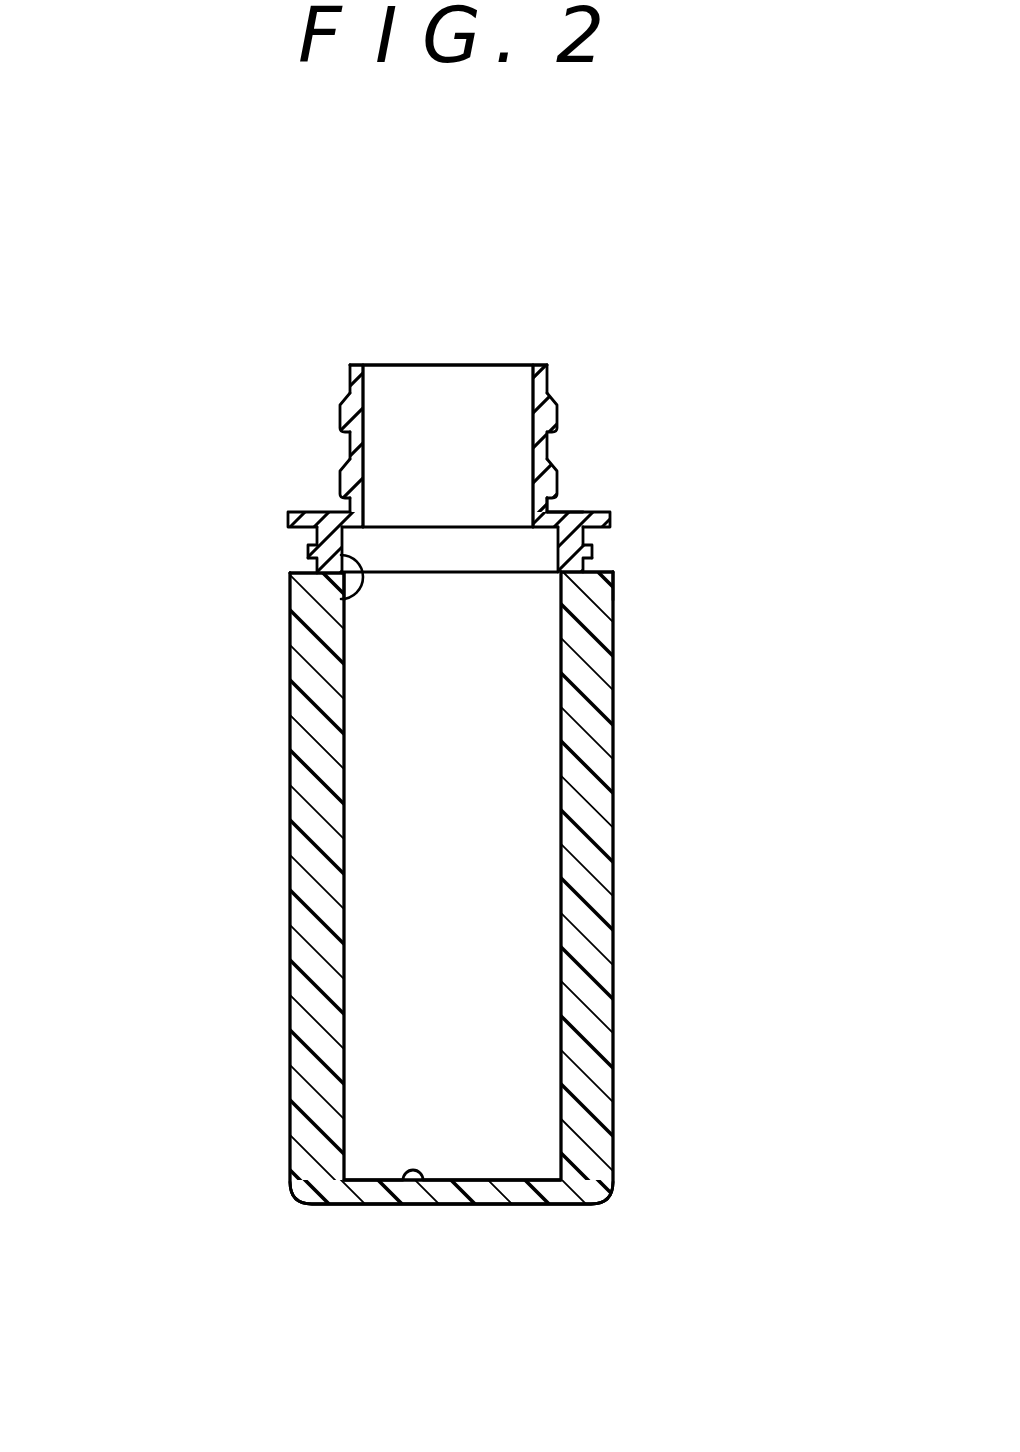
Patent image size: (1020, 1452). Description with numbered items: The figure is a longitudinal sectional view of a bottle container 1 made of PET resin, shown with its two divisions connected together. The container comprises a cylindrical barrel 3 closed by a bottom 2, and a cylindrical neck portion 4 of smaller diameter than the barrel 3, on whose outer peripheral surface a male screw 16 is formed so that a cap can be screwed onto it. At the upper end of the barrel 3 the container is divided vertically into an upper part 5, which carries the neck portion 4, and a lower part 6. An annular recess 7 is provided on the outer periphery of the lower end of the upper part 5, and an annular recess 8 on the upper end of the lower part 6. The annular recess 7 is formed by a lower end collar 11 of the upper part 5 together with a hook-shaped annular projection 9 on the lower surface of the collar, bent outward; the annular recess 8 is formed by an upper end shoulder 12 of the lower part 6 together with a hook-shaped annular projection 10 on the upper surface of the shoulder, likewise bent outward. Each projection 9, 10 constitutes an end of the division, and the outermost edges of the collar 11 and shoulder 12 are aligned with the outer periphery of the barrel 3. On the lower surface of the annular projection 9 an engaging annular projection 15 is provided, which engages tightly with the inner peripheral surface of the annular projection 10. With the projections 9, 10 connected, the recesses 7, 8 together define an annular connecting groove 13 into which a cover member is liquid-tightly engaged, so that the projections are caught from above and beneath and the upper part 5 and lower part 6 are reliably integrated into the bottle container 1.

The bottle container 1 is at (503, 313).
The bottom 2 is at (423, 1182).
The cylindrical barrel 3 is at (297, 884).
The cylindrical neck portion 4 is at (556, 442).
The upper part 5 is at (460, 459).
The lower part 6 is at (460, 939).
The annular recess 7 is at (610, 527).
The annular recess 8 is at (297, 572).
The hook-shaped annular projection 9 is at (303, 547).
The hook-shaped annular projection 10 is at (303, 562).
The lower end collar 11 is at (586, 513).
The upper end shoulder 12 is at (610, 567).
The annular connecting groove 13 is at (300, 550).
The engaging annular projection 15 is at (343, 597).
The thread ridges 16 is at (558, 403).